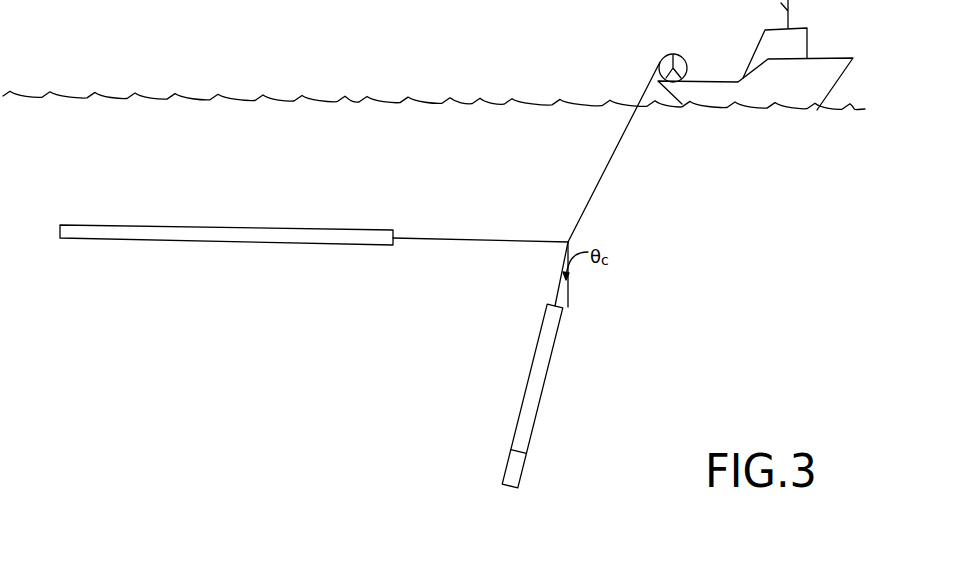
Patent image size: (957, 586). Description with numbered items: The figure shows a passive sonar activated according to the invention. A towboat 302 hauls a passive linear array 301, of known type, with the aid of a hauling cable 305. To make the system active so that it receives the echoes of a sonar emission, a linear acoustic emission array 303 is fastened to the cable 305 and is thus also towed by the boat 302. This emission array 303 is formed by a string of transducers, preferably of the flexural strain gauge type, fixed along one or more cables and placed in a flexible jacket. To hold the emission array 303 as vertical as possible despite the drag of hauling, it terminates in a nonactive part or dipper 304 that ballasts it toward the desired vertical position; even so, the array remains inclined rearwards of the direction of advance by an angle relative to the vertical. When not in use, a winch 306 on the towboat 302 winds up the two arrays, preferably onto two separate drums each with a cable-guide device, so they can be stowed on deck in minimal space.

The passive linear array 301 is at (102, 242).
The towboat 302 is at (773, 88).
The linear acoustic emission array 303 is at (548, 342).
The dipper 304 is at (507, 468).
The hauling cable 305 is at (610, 163).
The winch 306 is at (678, 53).